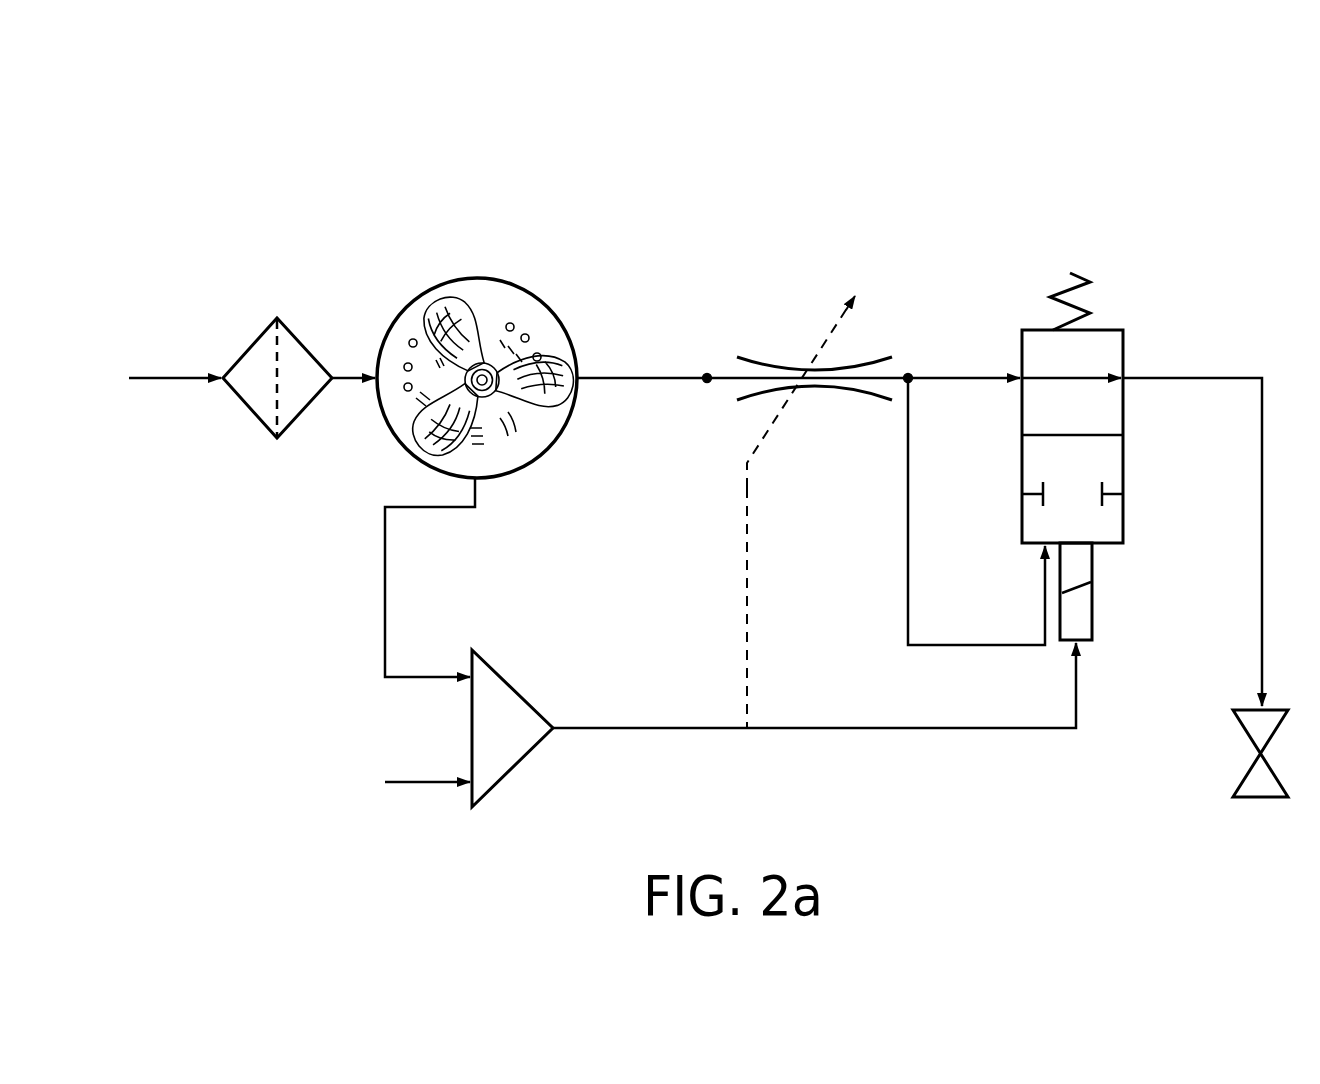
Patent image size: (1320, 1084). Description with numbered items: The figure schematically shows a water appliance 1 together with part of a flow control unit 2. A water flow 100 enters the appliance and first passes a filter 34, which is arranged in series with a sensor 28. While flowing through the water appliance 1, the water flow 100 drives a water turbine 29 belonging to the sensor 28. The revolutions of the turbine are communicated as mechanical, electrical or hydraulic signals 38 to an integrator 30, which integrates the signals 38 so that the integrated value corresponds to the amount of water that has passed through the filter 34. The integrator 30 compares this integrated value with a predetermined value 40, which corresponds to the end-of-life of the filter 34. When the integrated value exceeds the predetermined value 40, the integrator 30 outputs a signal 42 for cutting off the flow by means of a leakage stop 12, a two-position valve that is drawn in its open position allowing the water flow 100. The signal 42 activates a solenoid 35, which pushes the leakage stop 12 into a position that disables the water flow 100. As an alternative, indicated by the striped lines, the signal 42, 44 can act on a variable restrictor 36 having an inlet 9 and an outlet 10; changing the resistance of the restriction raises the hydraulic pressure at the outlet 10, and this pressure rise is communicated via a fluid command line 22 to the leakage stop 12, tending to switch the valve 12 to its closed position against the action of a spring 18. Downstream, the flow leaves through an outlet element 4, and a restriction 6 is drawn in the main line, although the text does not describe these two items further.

The water appliance 1 is at (684, 131).
The flow control unit 2 is at (895, 205).
The outlet valve 4 is at (1242, 777).
The flow restriction (venturi) 6 is at (775, 367).
The inlet 9 is at (708, 370).
The outlet 10 is at (908, 372).
The leakage stop 12 is at (1125, 340).
The spring 18 is at (1065, 288).
The fluid command line 22 is at (980, 643).
The sensor 28 is at (488, 355).
The water turbine 29 is at (520, 303).
The integrator 30 is at (515, 688).
The filter 34 is at (303, 345).
The solenoid 35 is at (1085, 622).
The variable restrictor 36 is at (837, 320).
The signals 38 is at (387, 587).
The predetermined value 40 is at (450, 785).
The signal 42 is at (660, 727).
The signal 44 is at (745, 597).
The water flow 100 is at (170, 377).